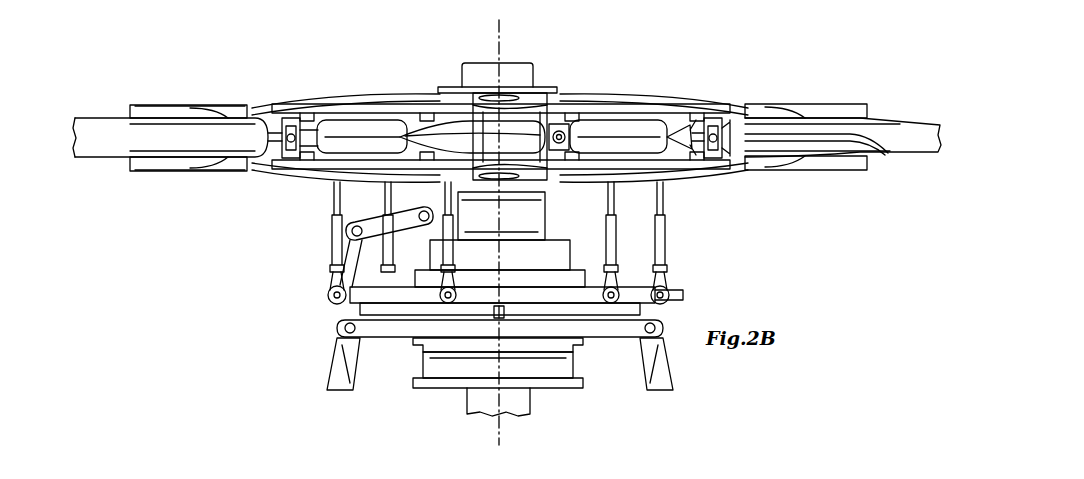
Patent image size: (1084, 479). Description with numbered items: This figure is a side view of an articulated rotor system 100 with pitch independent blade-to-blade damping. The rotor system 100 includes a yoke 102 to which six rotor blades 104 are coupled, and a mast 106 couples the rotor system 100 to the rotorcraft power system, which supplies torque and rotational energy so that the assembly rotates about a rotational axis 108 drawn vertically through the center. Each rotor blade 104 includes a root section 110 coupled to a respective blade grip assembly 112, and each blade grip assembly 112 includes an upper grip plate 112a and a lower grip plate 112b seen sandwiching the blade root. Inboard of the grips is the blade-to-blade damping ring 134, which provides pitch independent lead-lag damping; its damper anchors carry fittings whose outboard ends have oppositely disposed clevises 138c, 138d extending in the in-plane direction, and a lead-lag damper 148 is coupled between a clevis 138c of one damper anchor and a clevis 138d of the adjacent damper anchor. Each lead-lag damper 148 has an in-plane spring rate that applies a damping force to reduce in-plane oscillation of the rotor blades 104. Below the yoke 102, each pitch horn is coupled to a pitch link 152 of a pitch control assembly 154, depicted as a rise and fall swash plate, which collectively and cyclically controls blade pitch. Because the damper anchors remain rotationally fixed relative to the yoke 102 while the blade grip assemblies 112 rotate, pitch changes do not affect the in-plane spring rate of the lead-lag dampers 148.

The articulated rotor system 100 is at (772, 60).
The yoke 102 is at (537, 95).
The rotor blade 104 is at (97, 120).
The mast 106 is at (522, 402).
The rotational axis 108 is at (490, 34).
The root section 110 is at (147, 124).
The blade grip assembly 112 is at (232, 105).
The upper grip plate 112a is at (172, 106).
The lower grip plate 112b is at (172, 170).
The blade-to-blade damping ring 134 is at (352, 128).
The clevis 138c is at (710, 152).
The clevis 138d is at (560, 124).
The lead-lag damper 148 is at (651, 120).
The pitch link 152 is at (345, 226).
The pitch control assembly 154 is at (322, 304).